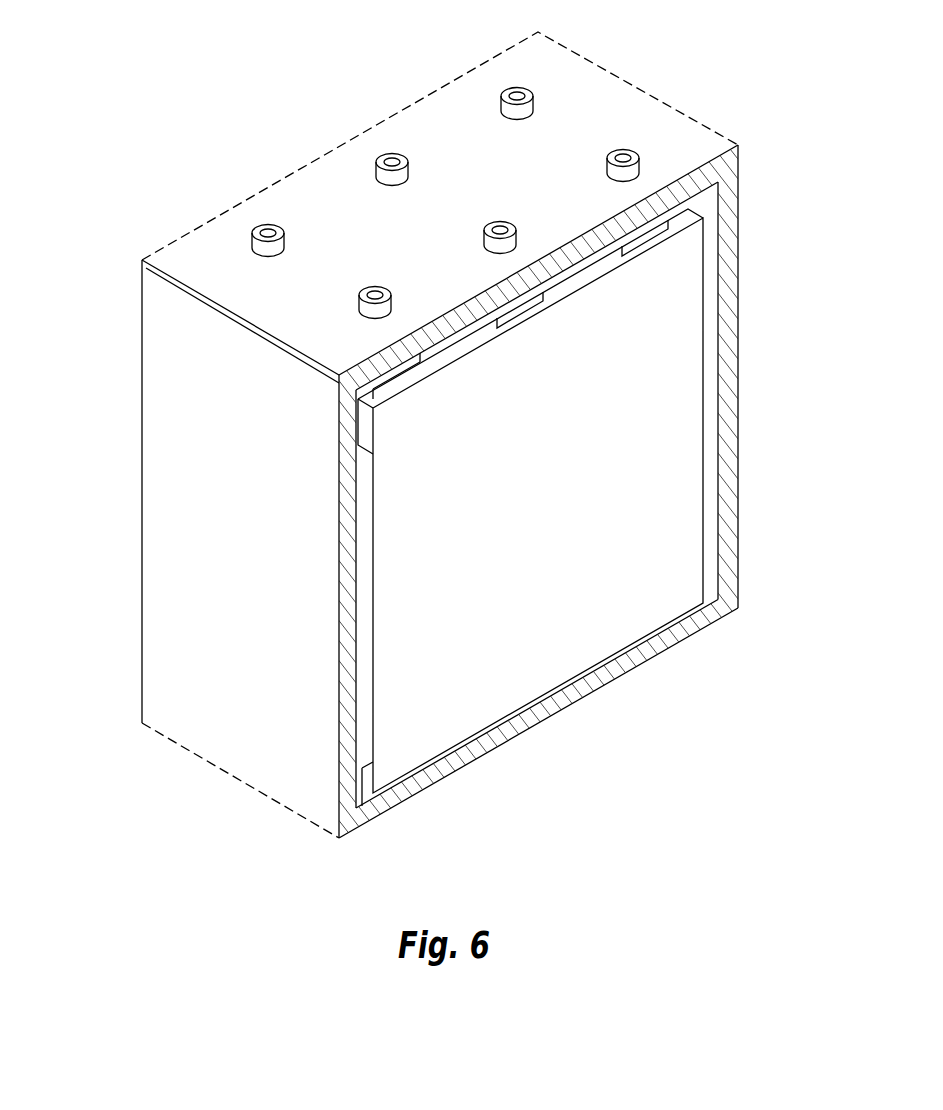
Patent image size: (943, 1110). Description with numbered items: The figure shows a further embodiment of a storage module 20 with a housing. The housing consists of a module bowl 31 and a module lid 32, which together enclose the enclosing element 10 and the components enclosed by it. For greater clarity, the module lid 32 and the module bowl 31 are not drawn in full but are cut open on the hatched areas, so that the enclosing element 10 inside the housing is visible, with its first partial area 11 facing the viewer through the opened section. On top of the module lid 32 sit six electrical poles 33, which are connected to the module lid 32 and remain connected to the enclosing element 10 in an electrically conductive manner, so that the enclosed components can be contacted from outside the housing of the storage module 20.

The enclosing element 10 is at (597, 407).
The first partial area 11 is at (618, 452).
The storage module 20 is at (746, 172).
The module bowl 31 is at (230, 460).
The module lid 32 is at (225, 263).
The electrical poles 33 is at (512, 100).